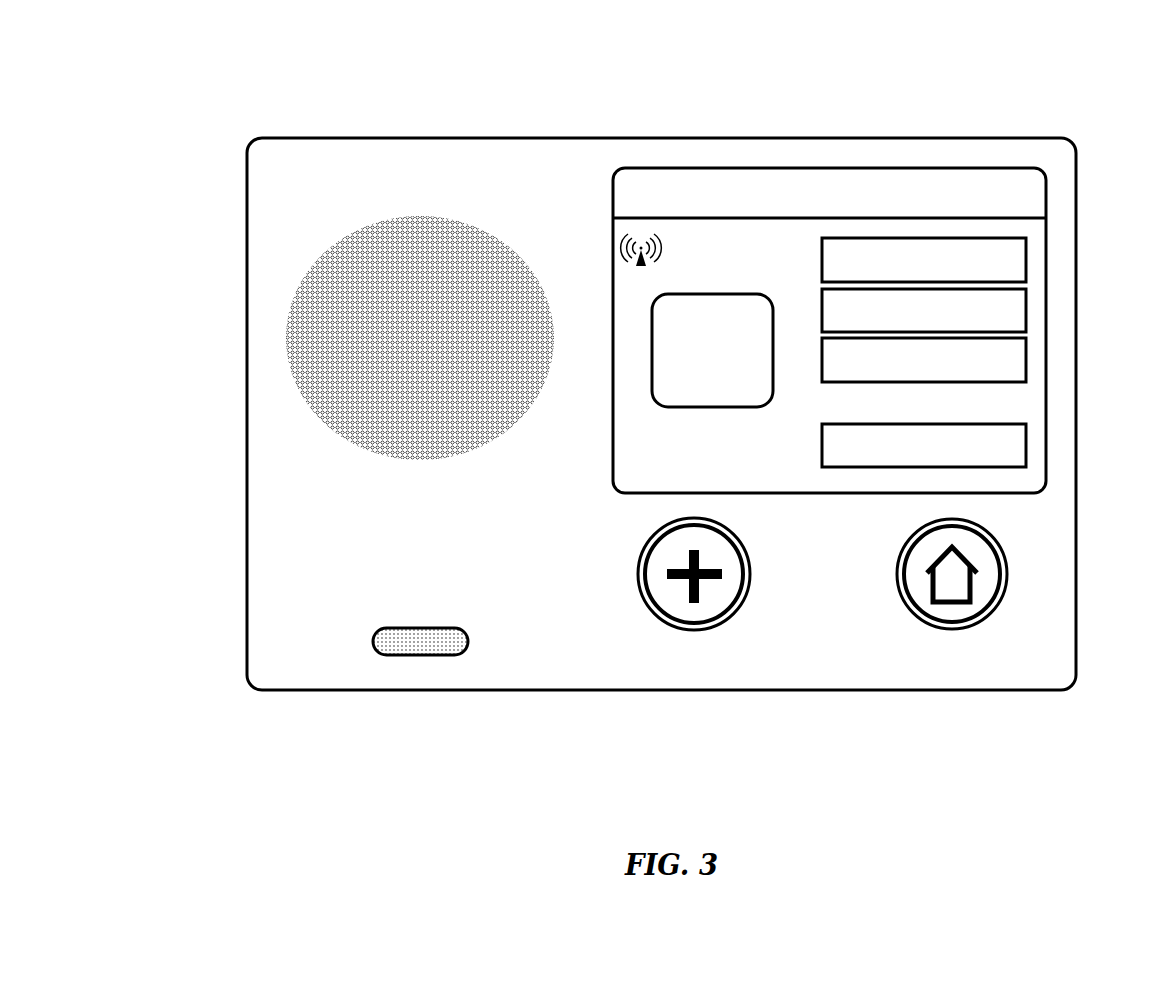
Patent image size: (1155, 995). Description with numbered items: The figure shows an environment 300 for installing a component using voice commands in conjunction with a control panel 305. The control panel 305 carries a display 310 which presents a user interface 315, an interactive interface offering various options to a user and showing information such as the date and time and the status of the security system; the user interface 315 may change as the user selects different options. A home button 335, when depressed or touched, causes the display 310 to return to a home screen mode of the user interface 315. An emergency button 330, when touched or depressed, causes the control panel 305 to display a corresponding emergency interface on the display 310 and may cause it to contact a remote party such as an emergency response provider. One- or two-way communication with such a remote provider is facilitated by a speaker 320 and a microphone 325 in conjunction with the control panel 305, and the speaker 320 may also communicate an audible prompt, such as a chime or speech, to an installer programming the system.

The environment 300 is at (138, 89).
The control panel 305 is at (1077, 172).
The display 310 is at (1047, 250).
The user interface 315 is at (1027, 307).
The speaker 320 is at (300, 271).
The microphone 325 is at (388, 657).
The emergency button 330 is at (640, 553).
The home button 335 is at (898, 553).